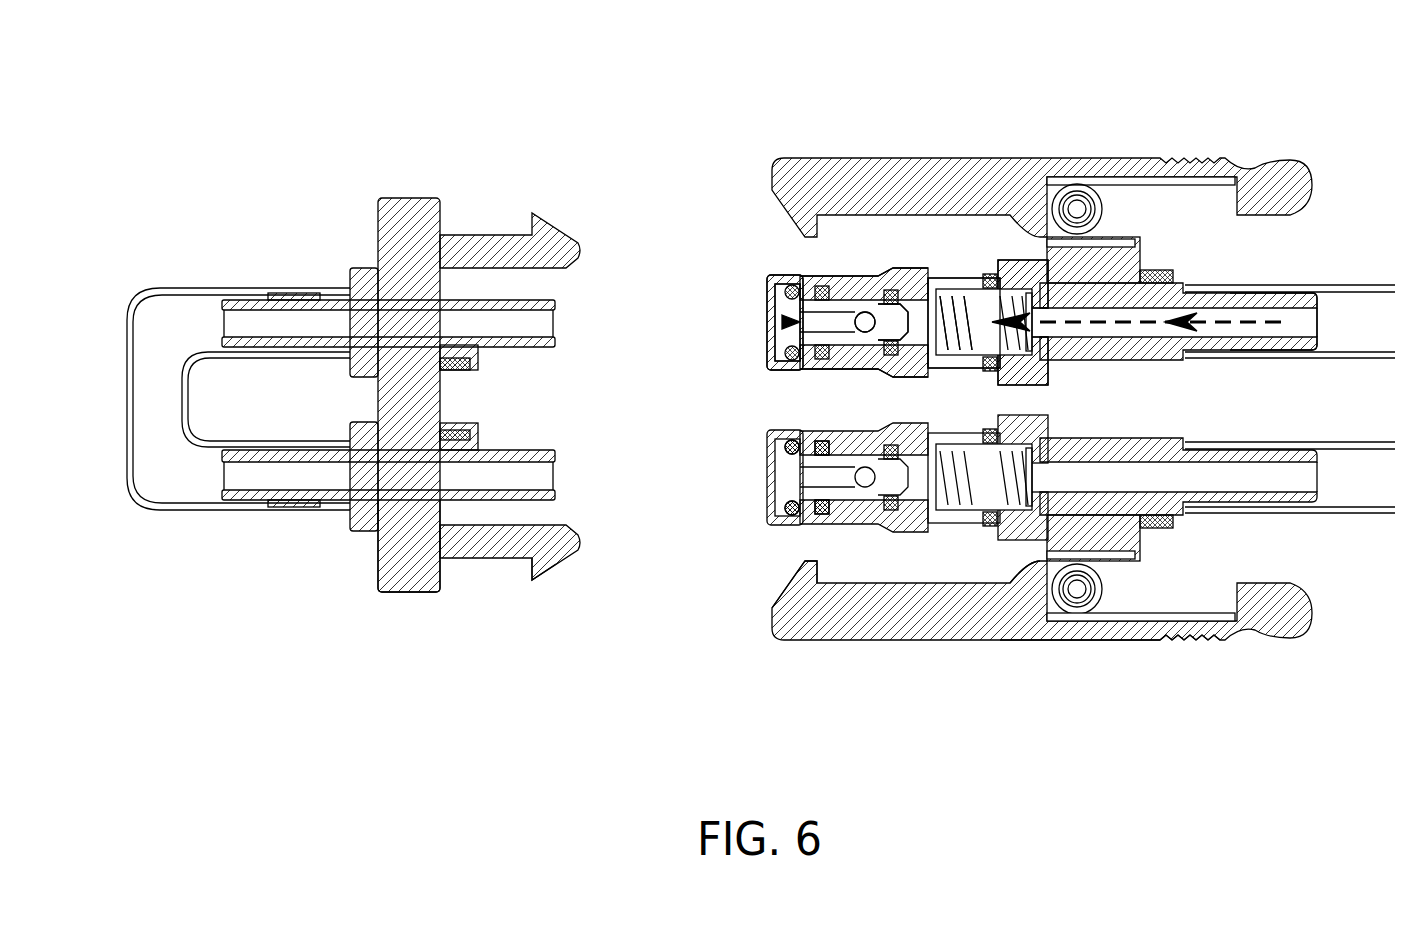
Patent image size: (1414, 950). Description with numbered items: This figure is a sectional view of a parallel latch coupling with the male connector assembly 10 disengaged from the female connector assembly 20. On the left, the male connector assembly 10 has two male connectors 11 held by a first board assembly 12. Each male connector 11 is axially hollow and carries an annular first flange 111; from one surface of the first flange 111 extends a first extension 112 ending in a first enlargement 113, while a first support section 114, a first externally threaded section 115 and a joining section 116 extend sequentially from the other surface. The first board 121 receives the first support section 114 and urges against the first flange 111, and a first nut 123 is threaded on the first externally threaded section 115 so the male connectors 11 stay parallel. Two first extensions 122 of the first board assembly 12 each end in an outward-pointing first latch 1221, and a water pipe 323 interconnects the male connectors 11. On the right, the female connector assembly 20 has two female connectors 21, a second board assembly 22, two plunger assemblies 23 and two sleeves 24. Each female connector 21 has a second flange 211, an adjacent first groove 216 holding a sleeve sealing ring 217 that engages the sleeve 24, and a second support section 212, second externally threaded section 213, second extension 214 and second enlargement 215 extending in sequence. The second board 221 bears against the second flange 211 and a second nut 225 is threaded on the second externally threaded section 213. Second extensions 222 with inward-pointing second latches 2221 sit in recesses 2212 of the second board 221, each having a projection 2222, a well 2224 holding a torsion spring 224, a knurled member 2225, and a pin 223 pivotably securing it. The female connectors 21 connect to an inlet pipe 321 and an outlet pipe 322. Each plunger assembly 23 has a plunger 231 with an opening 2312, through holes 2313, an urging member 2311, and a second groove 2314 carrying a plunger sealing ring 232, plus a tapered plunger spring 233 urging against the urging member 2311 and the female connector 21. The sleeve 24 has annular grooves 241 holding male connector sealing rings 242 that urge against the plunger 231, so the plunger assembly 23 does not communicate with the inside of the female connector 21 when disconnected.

The male connector assembly 10 is at (206, 203).
The male connector 11 is at (255, 110).
The first flange 111 is at (360, 268).
The first extension 112 is at (298, 293).
The first enlargement 113 is at (255, 290).
The first support section 114 is at (407, 283).
The first externally threaded section 115 is at (450, 268).
The joining section 116 is at (512, 300).
The first board assembly 12 is at (400, 705).
The first board 121 is at (418, 575).
The first extension 122 is at (512, 575).
The first latch 1221 is at (545, 578).
The first nut 123 is at (452, 528).
The water pipe 323 is at (153, 287).
The female connector assembly 20 is at (667, 203).
The female connector 21 is at (1290, 78).
The second flange 211 is at (1047, 275).
The second support section 212 is at (1100, 280).
The second externally threaded section 213 is at (1160, 275).
The second extension 214 is at (1243, 295).
The second enlargement 215 is at (1290, 295).
The first groove 216 is at (990, 292).
The sleeve sealing ring 217 is at (1023, 262).
The second board assembly 22 is at (1247, 765).
The second board 221 is at (1057, 543).
The recess 2212 is at (1108, 620).
The second extension 222 is at (877, 612).
The second latch 2221 is at (795, 575).
The projection 2222 is at (1020, 580).
The pin 223 is at (1063, 603).
The torsion spring 224 is at (1088, 642).
The well 2224 is at (1177, 600).
The knurled member 2225 is at (1200, 642).
The second nut 225 is at (1157, 530).
The plunger assembly 23 is at (935, 62).
The plunger 231 is at (800, 290).
The urging member 2311 is at (912, 300).
The opening 2312 is at (790, 318).
The through hole 2313 is at (858, 292).
The second groove 2314 is at (862, 300).
The plunger sealing ring 232 is at (898, 292).
The plunger spring 233 is at (948, 290).
The sleeve 24 is at (783, 518).
The annular groove 241 is at (803, 430).
The male connector sealing ring 242 is at (787, 430).
The inlet pipe 321 is at (1363, 290).
The outlet pipe 322 is at (1375, 512).